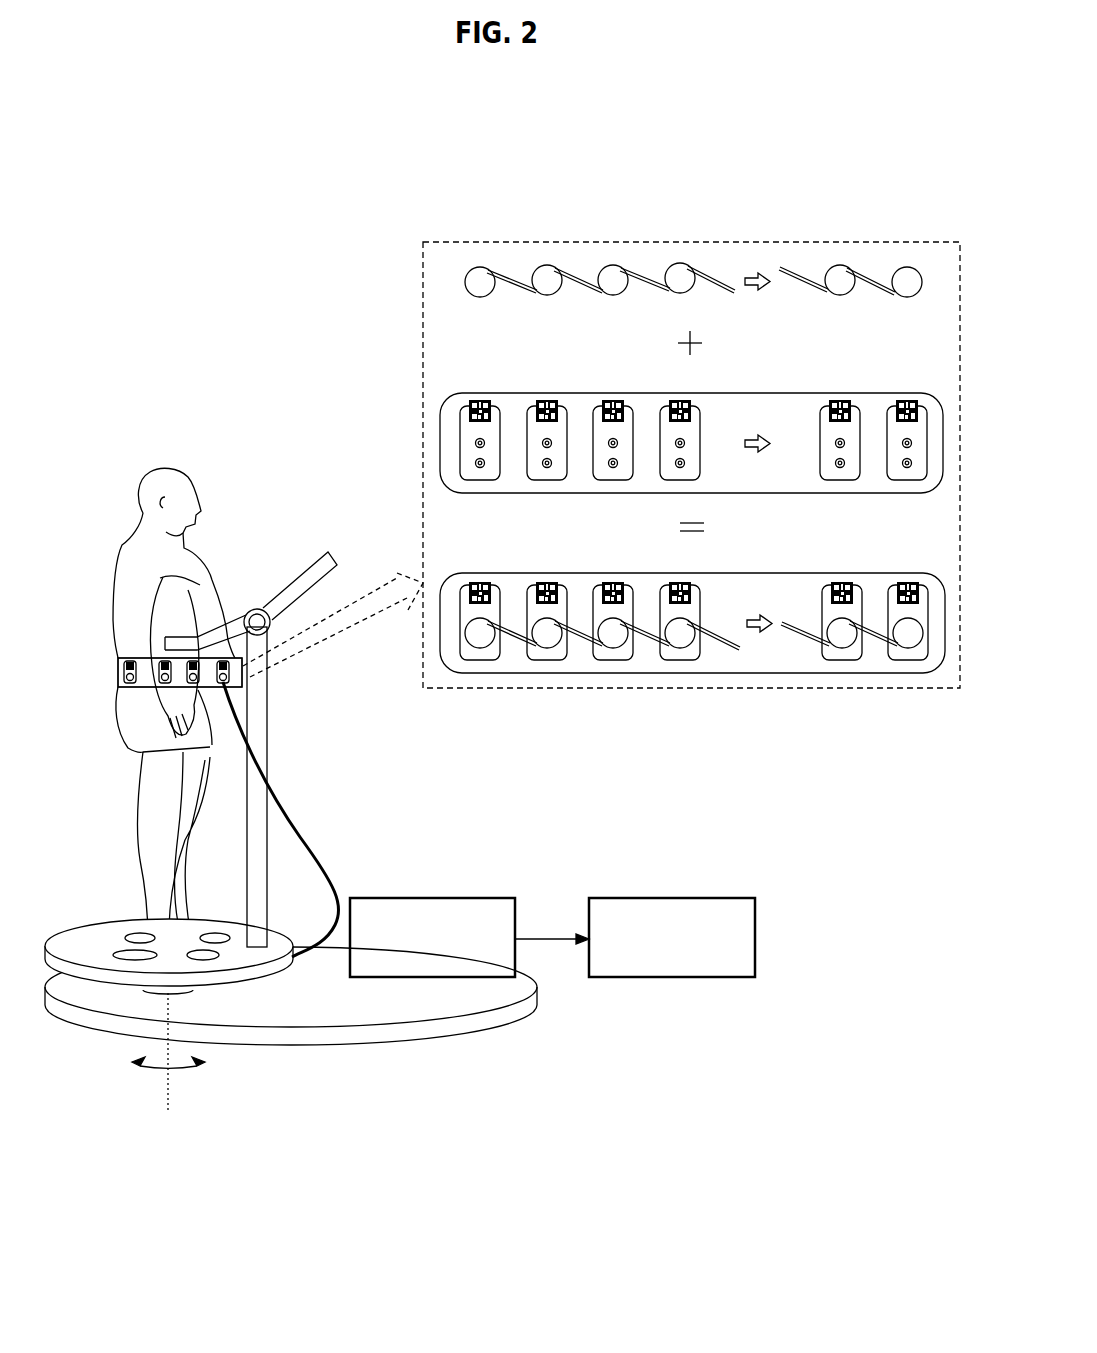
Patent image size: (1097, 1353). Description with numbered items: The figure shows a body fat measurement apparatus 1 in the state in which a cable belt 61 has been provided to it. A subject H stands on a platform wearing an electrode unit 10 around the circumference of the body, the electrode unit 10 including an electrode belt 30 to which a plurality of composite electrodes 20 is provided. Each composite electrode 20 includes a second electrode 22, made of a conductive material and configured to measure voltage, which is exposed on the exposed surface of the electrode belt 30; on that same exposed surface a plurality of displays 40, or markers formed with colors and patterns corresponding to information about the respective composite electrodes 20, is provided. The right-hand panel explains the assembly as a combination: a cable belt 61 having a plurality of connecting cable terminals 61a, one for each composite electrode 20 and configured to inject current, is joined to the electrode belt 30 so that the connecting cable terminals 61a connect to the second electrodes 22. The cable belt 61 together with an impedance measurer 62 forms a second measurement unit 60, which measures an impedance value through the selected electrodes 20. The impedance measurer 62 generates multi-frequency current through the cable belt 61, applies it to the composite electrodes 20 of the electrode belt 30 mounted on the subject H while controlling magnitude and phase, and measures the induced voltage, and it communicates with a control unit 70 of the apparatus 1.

The body fat measurement apparatus 1 is at (501, 139).
The electrode unit 10 is at (113, 667).
The composite electrode 20 is at (225, 672).
The second electrode 22 is at (476, 462).
The electrode belt 30 is at (118, 680).
The display 40 is at (470, 402).
The second measurement unit 60 is at (398, 1099).
The cable belt 61 is at (580, 276).
The connecting cable terminal 61a is at (480, 276).
The impedance measurer 62 is at (410, 978).
The control unit 70 is at (672, 977).
The subject H is at (121, 556).